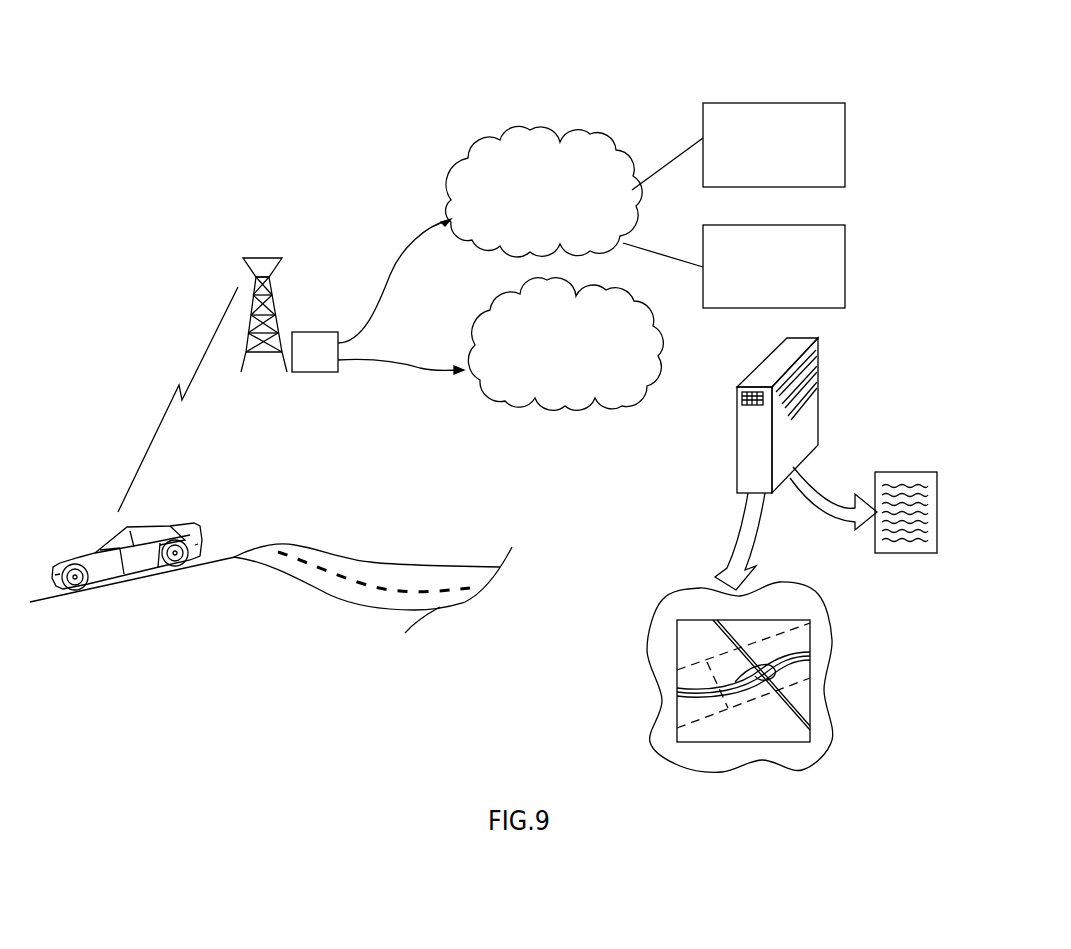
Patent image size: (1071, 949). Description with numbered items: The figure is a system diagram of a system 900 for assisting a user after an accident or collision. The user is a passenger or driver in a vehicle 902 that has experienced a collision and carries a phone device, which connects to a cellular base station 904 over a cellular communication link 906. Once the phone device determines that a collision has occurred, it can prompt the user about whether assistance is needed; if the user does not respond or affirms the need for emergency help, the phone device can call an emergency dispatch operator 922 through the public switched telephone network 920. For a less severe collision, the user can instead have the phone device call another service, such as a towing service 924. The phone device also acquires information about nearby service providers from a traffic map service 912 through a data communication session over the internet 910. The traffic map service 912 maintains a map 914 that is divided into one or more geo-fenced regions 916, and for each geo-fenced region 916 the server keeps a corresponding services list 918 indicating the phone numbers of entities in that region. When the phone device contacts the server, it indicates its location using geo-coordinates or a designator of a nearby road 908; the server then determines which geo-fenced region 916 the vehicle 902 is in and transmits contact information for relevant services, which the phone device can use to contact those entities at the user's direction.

The system 900 is at (904, 48).
The vehicle 902 is at (172, 520).
The cellular base station 904 is at (312, 332).
The cellular communication link 906 is at (206, 347).
The road 908 is at (372, 560).
The internet 910 is at (567, 408).
The traffic map service 912 is at (757, 365).
The map 914 is at (692, 632).
The geo-fenced region 916 is at (700, 665).
The services list 918 is at (903, 472).
The public switched telephone network 920 is at (490, 152).
The emergency dispatch operator 922 is at (845, 145).
The towing service 924 is at (845, 265).